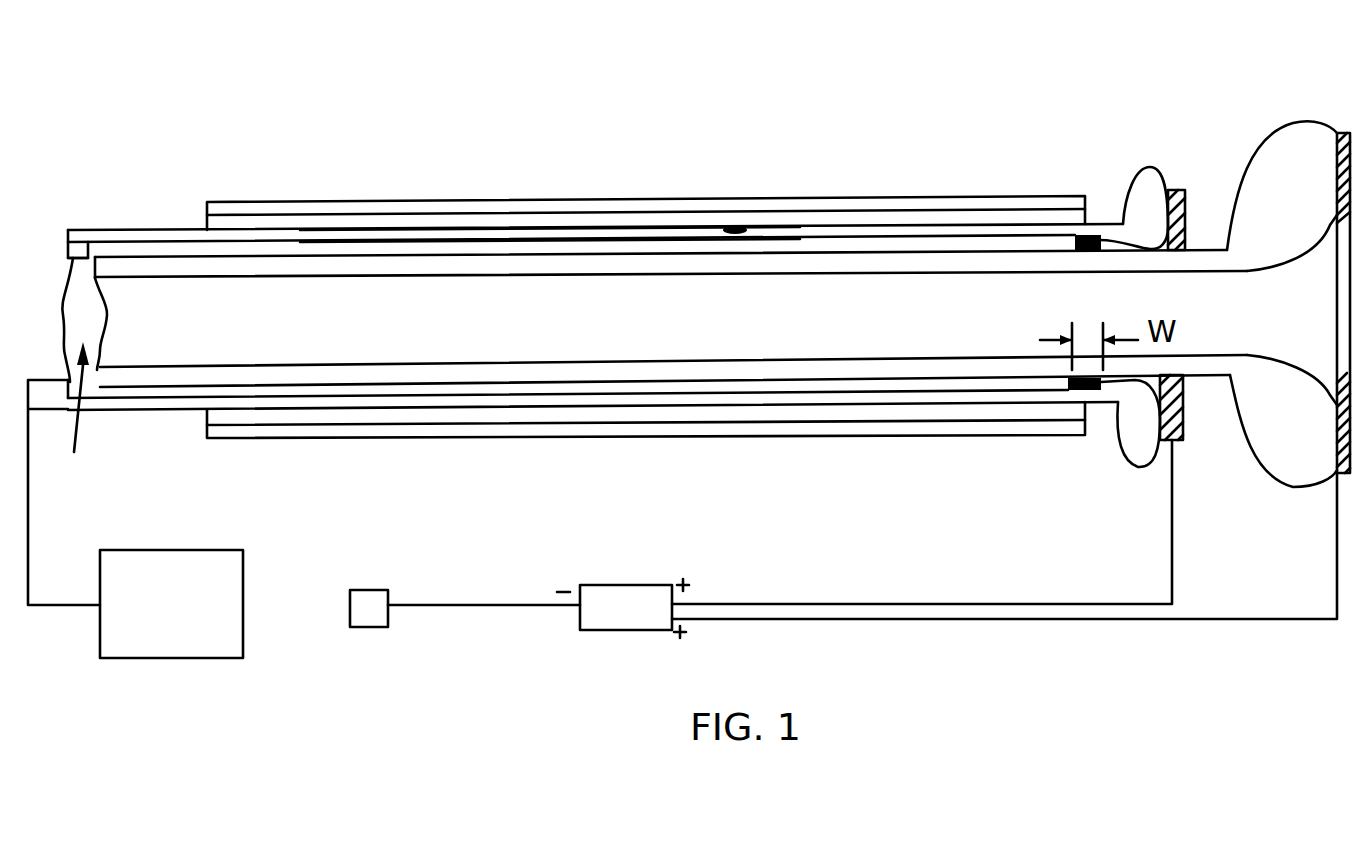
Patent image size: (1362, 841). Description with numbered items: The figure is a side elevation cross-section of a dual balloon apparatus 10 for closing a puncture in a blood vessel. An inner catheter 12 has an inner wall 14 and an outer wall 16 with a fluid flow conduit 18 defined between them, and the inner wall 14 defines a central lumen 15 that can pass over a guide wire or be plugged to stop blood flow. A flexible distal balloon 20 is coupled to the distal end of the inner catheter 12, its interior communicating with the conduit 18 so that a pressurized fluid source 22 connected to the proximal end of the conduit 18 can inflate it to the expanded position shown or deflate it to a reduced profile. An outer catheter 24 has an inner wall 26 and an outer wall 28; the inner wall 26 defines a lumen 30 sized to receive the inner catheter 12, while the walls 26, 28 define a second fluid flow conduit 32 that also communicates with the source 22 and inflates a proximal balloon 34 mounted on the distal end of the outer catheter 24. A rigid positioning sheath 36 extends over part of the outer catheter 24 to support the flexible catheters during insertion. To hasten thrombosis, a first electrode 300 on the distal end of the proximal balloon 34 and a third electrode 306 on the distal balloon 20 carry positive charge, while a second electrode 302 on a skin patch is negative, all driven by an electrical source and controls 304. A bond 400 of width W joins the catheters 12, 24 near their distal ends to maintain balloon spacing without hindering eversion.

The apparatus 10 is at (781, 108).
The inner catheter 12 is at (142, 300).
The inner wall 14 is at (190, 278).
The central lumen 15 is at (492, 341).
The outer wall 16 is at (172, 257).
The fluid flow conduit 18 is at (385, 372).
The distal balloon 20 is at (1270, 153).
The pressurized fluid source 22 is at (163, 643).
The outer catheter 24 is at (66, 473).
The inner wall 26 is at (562, 240).
The outer wall 28 is at (542, 227).
The lumen 30 is at (73, 258).
The second fluid flow conduit 32 is at (735, 230).
The proximal balloon 34 is at (1130, 470).
The positioning sheath 36 is at (520, 440).
The first electrode 300 is at (1185, 440).
The second electrode 302 is at (365, 617).
The electrical source and associated controls 304 is at (612, 632).
The third electrode 306 is at (1335, 133).
The bond 400 is at (1102, 232).